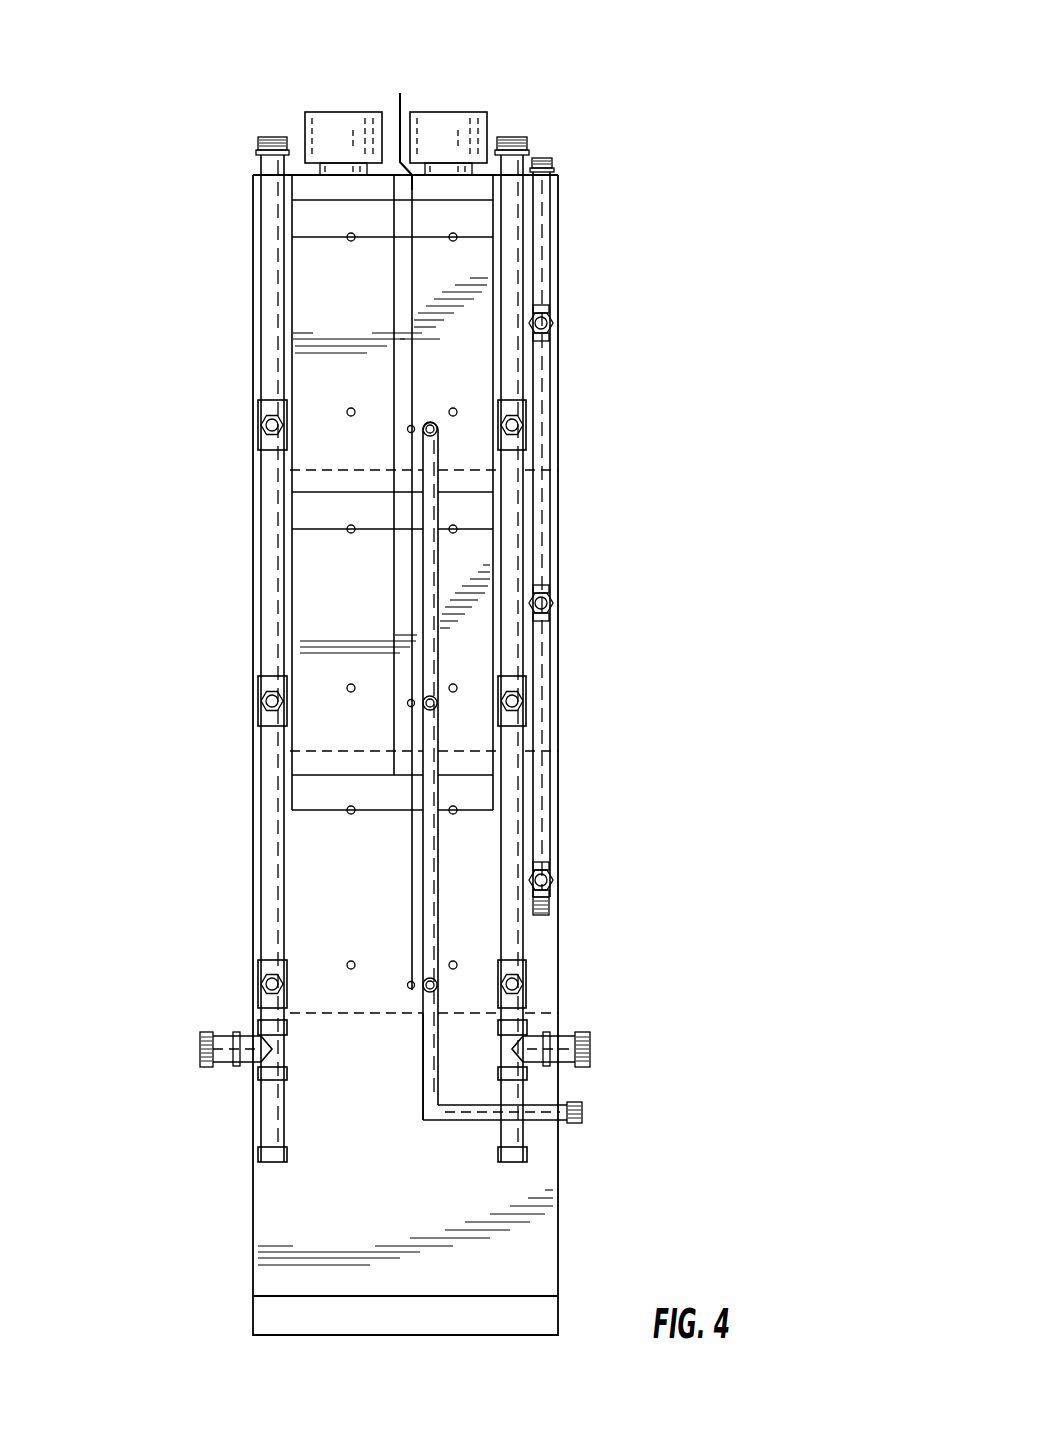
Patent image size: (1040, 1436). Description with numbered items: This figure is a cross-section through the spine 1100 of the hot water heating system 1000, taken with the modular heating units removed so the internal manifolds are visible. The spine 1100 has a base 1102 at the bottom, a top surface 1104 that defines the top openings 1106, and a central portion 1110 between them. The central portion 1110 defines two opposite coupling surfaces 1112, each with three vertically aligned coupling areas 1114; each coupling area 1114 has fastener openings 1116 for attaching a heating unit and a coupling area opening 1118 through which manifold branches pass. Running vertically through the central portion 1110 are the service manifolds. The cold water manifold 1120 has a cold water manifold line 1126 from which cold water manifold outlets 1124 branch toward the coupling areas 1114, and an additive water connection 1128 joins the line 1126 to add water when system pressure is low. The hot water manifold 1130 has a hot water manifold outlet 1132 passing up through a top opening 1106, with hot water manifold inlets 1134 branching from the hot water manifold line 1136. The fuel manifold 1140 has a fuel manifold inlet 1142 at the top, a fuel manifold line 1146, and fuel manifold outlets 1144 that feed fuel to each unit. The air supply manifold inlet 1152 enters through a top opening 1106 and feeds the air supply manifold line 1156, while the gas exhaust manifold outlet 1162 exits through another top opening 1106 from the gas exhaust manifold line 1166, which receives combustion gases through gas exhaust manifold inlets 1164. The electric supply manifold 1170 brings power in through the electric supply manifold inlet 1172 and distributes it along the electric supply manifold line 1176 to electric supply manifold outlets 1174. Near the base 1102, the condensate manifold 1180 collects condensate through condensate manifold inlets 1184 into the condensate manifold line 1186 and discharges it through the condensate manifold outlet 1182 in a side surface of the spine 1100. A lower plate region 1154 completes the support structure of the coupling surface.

The hot water heating system 1000 is at (672, 66).
The spine 1100 is at (225, 262).
The base 1102 is at (573, 1213).
The top surface 1104 is at (292, 160).
The top openings 1106 is at (256, 173).
The central portion 1110 is at (238, 576).
The coupling surface 1112 is at (508, 135).
The coupling area 1114 is at (307, 322).
The fastener opening 1116 is at (345, 965).
The coupling area opening 1118 is at (320, 735).
The cold water manifold 1120 is at (515, 558).
The cold water manifold outlet 1124 is at (522, 703).
The cold water manifold line 1126 is at (510, 518).
The additive water connection 1128 is at (605, 1048).
The hot water manifold 1130 is at (260, 480).
The hot water manifold outlet 1132 is at (268, 137).
The hot water manifold inlet 1134 is at (268, 704).
The hot water manifold line 1136 is at (268, 302).
The fuel manifold 1140 is at (541, 398).
The fuel manifold inlet 1142 is at (548, 158).
The fuel manifold outlet 1144 is at (548, 300).
The fuel manifold line 1146 is at (547, 445).
The air supply manifold inlet 1152 is at (338, 112).
The lower plate 1154 is at (318, 788).
The air supply manifold line 1156 is at (315, 367).
The gas exhaust manifold outlet 1162 is at (452, 112).
The gas exhaust manifold inlet 1164 is at (485, 793).
The gas exhaust manifold line 1166 is at (470, 283).
The electric supply manifold 1170 is at (426, 606).
The electric supply manifold inlet 1172 is at (400, 98).
The electric supply manifold outlet 1174 is at (413, 415).
The electric supply manifold line 1176 is at (412, 275).
The condensate manifold 1180 is at (446, 1128).
The condensate manifold outlet 1182 is at (582, 1113).
The condensate manifold inlet 1184 is at (430, 992).
The condensate manifold line 1186 is at (427, 1075).